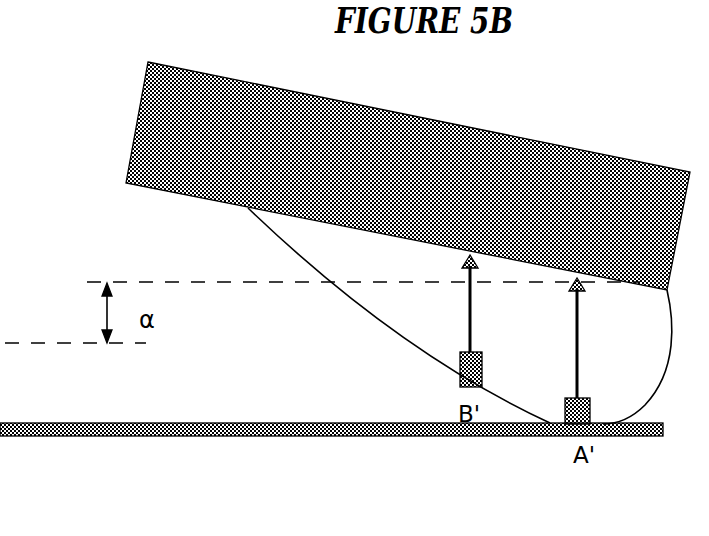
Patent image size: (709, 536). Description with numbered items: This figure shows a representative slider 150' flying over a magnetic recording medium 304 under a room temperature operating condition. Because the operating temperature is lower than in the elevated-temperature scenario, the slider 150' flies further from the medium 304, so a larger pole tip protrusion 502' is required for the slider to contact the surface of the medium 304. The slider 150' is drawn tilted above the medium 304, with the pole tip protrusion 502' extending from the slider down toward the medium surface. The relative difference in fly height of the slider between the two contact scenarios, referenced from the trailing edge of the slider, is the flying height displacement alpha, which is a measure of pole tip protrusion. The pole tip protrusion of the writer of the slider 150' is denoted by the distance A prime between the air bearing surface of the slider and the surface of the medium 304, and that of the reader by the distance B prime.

The slider 150' is at (408, 176).
The pole tip protrusion 502' is at (460, 316).
The magnetic recording medium 304 is at (286, 437).